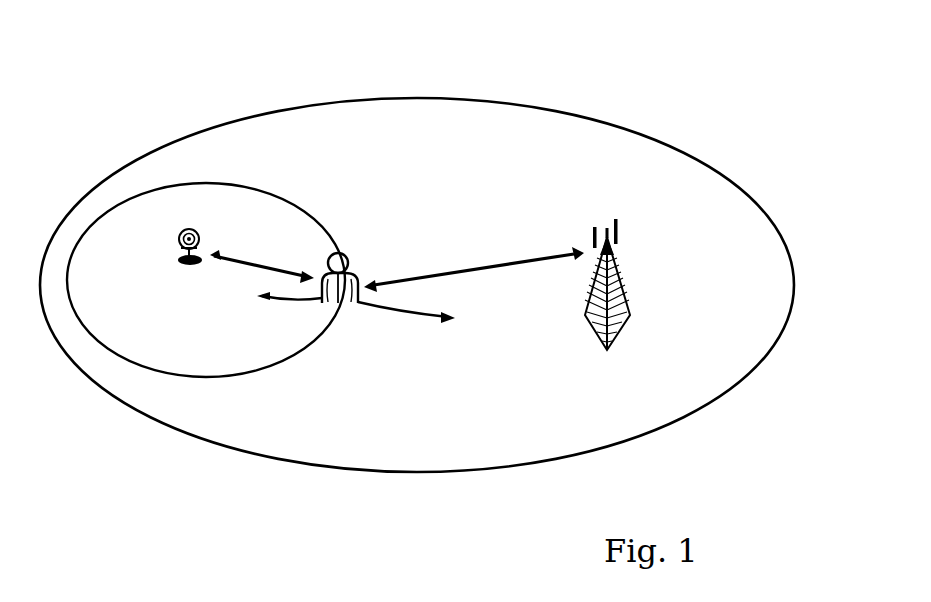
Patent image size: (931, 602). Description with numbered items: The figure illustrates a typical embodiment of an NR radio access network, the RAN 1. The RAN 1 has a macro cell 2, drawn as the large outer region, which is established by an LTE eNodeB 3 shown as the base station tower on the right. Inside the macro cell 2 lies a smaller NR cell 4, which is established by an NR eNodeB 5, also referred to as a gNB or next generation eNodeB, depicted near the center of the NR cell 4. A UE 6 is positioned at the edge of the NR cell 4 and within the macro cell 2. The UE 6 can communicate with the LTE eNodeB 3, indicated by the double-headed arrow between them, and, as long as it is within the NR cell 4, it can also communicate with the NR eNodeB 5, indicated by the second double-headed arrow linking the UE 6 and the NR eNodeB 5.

The radio access network 1 is at (524, 64).
The macro cell 2 is at (405, 97).
The LTE eNodeB 3 is at (616, 266).
The NR cell 4 is at (276, 186).
The NR eNodeB 5 is at (207, 236).
The UE 6 is at (350, 252).